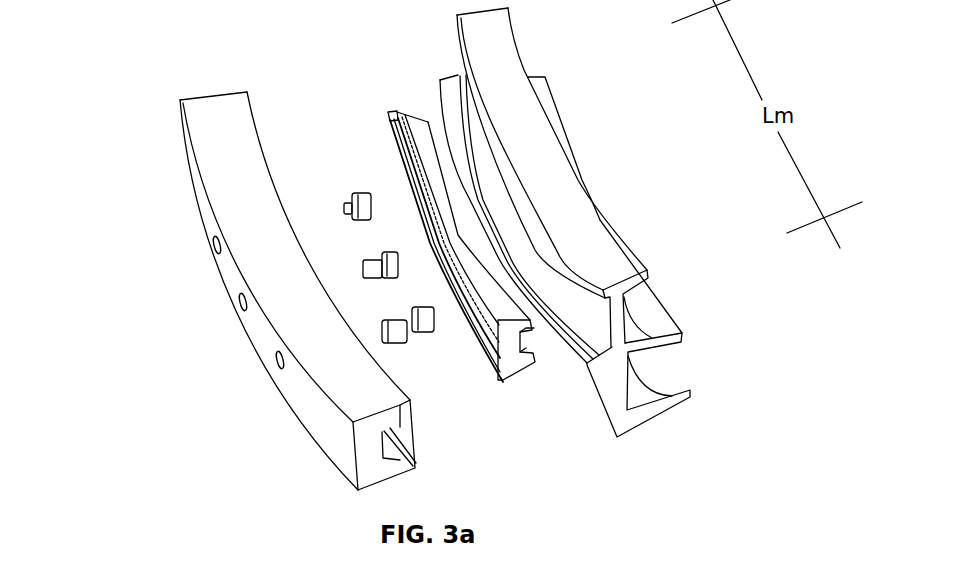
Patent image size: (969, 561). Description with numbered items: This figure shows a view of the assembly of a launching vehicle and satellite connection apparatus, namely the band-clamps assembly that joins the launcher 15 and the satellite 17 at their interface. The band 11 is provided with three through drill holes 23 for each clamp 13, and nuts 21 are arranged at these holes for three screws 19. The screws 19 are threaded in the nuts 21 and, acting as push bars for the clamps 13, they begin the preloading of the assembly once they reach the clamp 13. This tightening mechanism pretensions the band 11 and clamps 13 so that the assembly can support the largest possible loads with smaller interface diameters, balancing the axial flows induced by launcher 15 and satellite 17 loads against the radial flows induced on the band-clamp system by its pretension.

The band 11 is at (193, 118).
The clamp 13 is at (525, 363).
The launcher 15 is at (677, 402).
The satellite 17 is at (627, 265).
The screws 19 is at (382, 330).
The nuts 21 is at (410, 263).
The through drill holes 23 is at (278, 358).